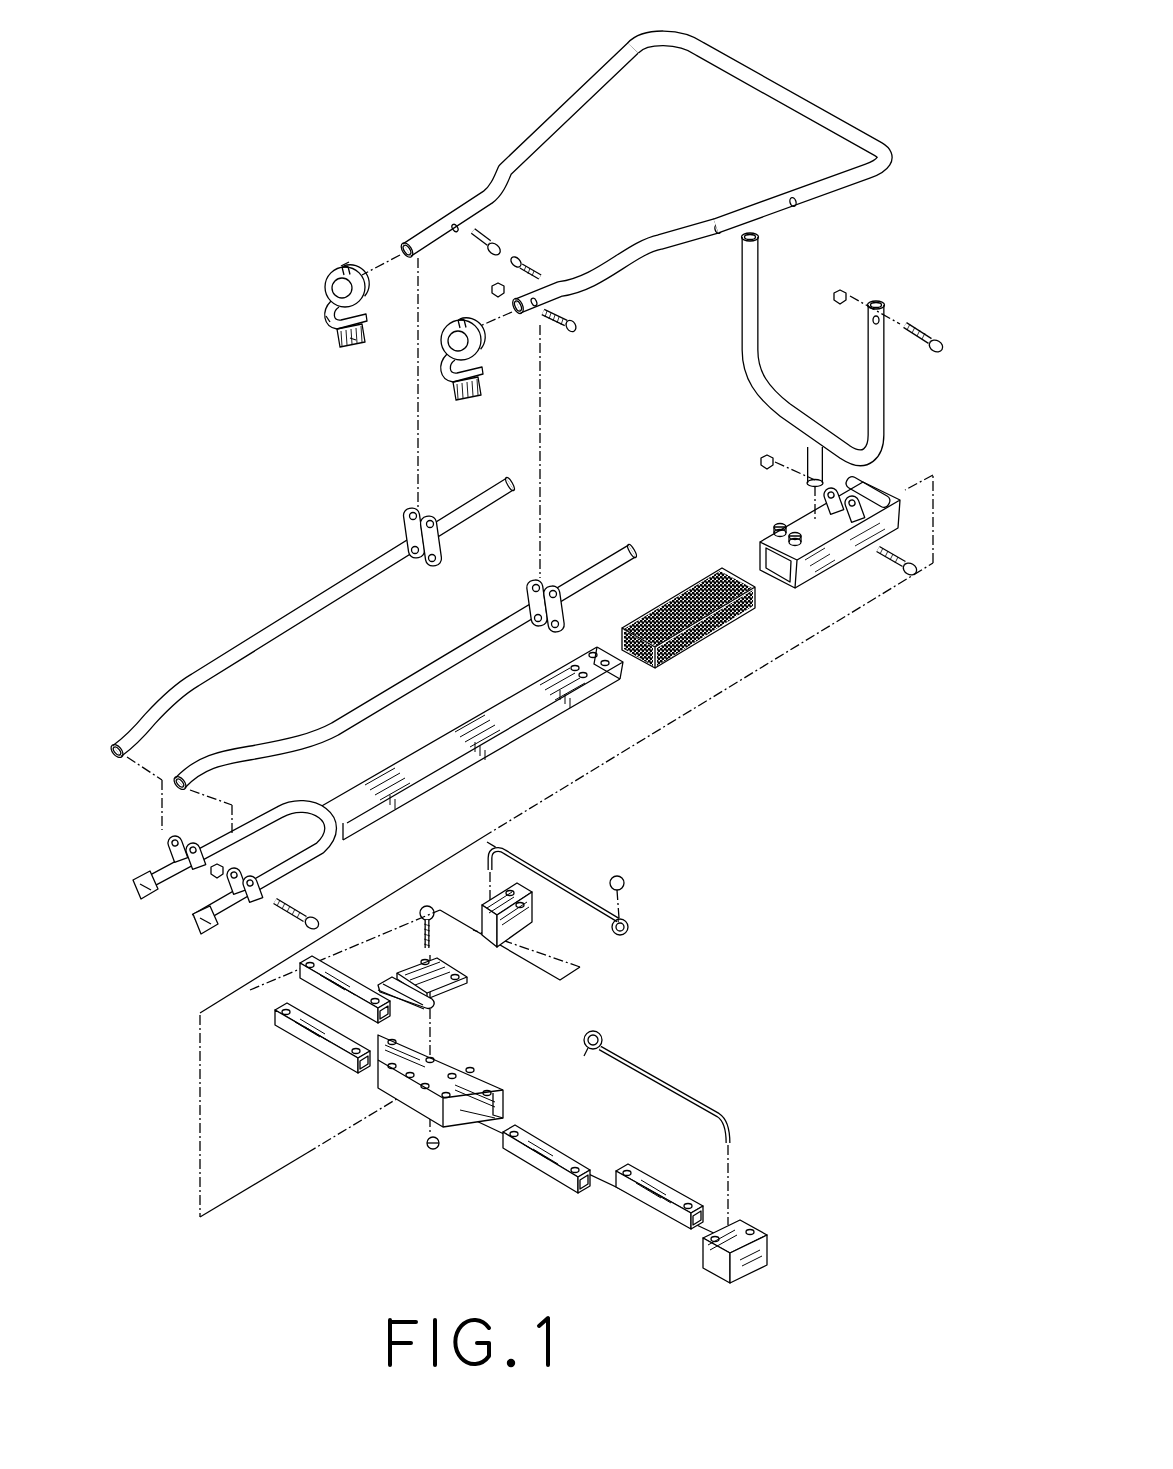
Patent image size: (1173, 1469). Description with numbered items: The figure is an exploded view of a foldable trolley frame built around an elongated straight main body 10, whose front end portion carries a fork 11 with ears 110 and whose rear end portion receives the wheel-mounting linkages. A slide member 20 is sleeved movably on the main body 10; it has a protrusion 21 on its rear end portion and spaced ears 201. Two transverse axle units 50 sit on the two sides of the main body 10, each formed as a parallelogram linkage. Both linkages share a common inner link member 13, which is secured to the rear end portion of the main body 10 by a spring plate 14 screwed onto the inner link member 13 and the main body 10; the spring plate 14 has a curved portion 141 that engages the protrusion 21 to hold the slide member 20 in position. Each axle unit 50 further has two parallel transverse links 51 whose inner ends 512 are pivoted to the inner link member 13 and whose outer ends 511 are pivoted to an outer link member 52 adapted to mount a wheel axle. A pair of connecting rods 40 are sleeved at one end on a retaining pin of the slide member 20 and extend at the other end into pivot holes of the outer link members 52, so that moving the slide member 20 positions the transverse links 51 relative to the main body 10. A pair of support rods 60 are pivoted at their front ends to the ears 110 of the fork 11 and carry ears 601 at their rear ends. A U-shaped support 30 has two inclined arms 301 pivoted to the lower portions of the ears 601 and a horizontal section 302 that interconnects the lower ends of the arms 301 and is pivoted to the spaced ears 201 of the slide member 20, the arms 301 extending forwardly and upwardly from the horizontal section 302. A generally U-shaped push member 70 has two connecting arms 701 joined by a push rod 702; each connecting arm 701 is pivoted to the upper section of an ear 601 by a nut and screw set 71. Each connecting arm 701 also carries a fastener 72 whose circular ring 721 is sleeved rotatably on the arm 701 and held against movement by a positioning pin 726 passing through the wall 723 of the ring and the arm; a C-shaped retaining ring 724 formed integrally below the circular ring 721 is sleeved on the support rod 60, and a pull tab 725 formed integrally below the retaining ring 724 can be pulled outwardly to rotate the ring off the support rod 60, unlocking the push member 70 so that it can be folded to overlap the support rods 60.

The main body 10 is at (378, 805).
The fork 11 is at (328, 850).
The ears 110 is at (243, 907).
The inner link member 13 is at (470, 1083).
The spring plate 14 is at (417, 971).
The curved portion 141 is at (393, 977).
The slide member 20 is at (828, 514).
The spaced ears 201 is at (855, 514).
The protrusion 21 is at (883, 480).
The U-shaped support 30 is at (822, 377).
The inclined arms 301 is at (760, 277).
The horizontal section 302 is at (810, 433).
The connecting rods 40 is at (683, 1041).
The transverse axle units 50 is at (526, 1125).
The transverse links 51 is at (643, 1180).
The outer ends 511 is at (578, 1197).
The inner ends 512 is at (497, 1142).
The outer link member 52 is at (743, 1227).
The support rods 60 is at (373, 655).
The ears 601 is at (545, 570).
The push member 70 is at (623, 290).
The connecting arms 701 is at (528, 140).
The push rod 702 is at (743, 72).
The nut and screw set 71 is at (567, 313).
The fastener 72 is at (382, 305).
The circular ring 721 is at (330, 280).
The wall 723 is at (348, 262).
The C-shaped retaining ring 724 is at (333, 323).
The pull tab 725 is at (360, 330).
The positioning pin 726 is at (537, 260).